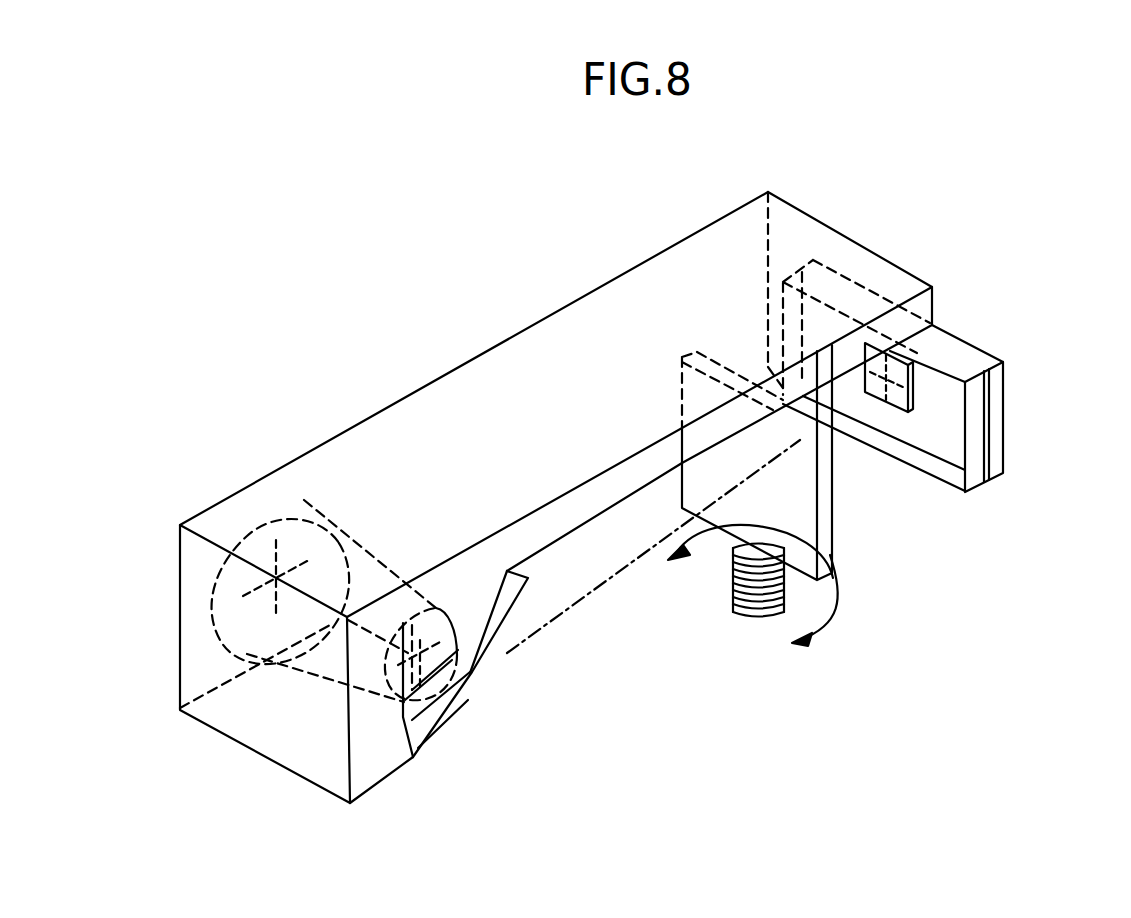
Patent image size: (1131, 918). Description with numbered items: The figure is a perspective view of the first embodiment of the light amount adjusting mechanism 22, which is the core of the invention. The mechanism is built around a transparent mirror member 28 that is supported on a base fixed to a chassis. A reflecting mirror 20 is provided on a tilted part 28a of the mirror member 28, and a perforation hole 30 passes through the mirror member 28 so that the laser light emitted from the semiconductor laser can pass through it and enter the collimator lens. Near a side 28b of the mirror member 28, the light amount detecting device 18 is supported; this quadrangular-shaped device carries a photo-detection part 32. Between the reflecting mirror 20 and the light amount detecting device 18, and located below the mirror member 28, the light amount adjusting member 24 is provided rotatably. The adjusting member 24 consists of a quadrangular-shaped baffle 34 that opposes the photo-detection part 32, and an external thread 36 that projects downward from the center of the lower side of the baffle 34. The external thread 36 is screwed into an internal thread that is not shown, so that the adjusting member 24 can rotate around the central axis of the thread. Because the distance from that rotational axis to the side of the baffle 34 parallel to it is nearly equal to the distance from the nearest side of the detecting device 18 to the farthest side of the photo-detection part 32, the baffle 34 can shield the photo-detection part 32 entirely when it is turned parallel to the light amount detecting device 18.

The light amount adjusting mechanism 22 is at (272, 225).
The transparent mirror member 28 is at (553, 278).
The tilted part 28a is at (497, 620).
The side 28b is at (895, 262).
The perforation hole 30 is at (312, 680).
The reflecting mirror 20 is at (450, 712).
The light amount adjusting member 24 is at (830, 507).
The baffle 34 is at (830, 555).
The external thread 36 is at (737, 613).
The light amount detecting device 18 is at (1000, 423).
The photo-detection part 32 is at (898, 413).